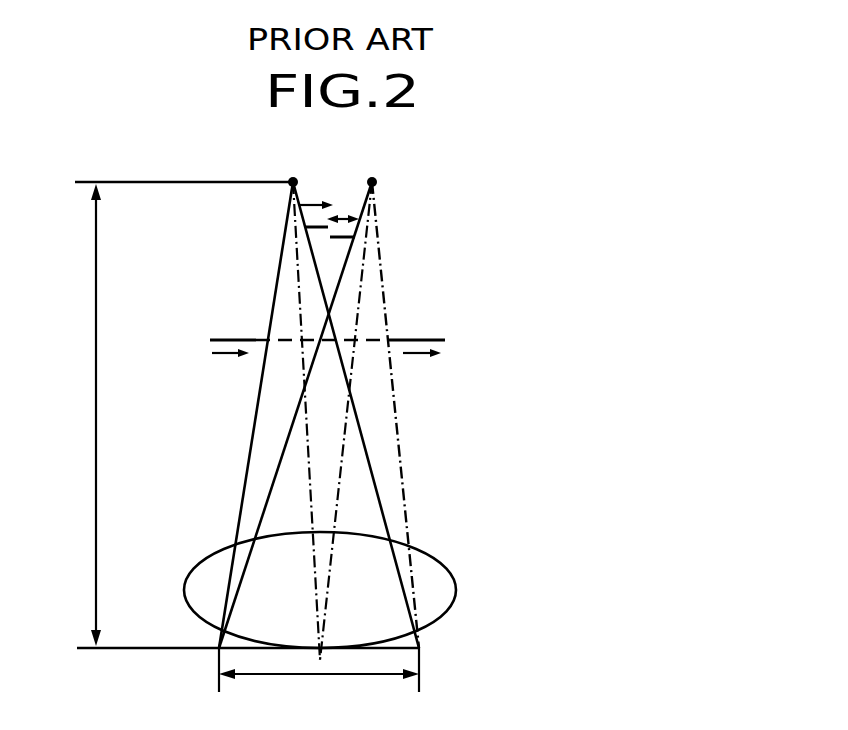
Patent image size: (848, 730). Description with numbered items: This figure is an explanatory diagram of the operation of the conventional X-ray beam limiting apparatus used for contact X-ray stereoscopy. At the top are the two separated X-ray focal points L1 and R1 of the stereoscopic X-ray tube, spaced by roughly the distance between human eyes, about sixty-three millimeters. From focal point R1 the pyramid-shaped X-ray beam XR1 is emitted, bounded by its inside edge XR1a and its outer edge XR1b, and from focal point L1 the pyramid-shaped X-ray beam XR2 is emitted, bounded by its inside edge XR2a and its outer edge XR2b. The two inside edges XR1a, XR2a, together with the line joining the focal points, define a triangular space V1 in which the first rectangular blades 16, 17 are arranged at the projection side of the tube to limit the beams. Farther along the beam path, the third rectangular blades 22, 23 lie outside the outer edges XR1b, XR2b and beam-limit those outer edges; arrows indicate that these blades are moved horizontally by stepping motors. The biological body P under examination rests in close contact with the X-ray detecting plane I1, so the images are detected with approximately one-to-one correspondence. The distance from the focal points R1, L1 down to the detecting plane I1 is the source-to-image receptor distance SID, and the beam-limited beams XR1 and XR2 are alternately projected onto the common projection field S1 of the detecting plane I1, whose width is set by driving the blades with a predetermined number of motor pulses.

The X-ray focal point L1 is at (292, 180).
The X-ray focal point R1 is at (376, 180).
The first rectangular blade 17 is at (315, 230).
The first rectangular blade 16 is at (352, 240).
The triangular space V1 is at (330, 270).
The third rectangular blade 23 is at (210, 350).
The third rectangular blade 22 is at (445, 347).
The pyramid-shaped X-ray beam XR1 is at (335, 421).
The inside edge of X-ray beam XR1a is at (290, 428).
The outer edge of X-ray beam XR1b is at (398, 422).
The pyramid-shaped X-ray beam XR2 is at (305, 421).
The inside edge of X-ray beam XR2a is at (383, 528).
The outer edge of X-ray beam XR2b is at (240, 512).
The biological body P is at (440, 578).
The X-ray detecting plane I1 is at (400, 648).
The X-ray source to image receptor distance SID is at (65, 415).
The common projection field S1 is at (319, 694).